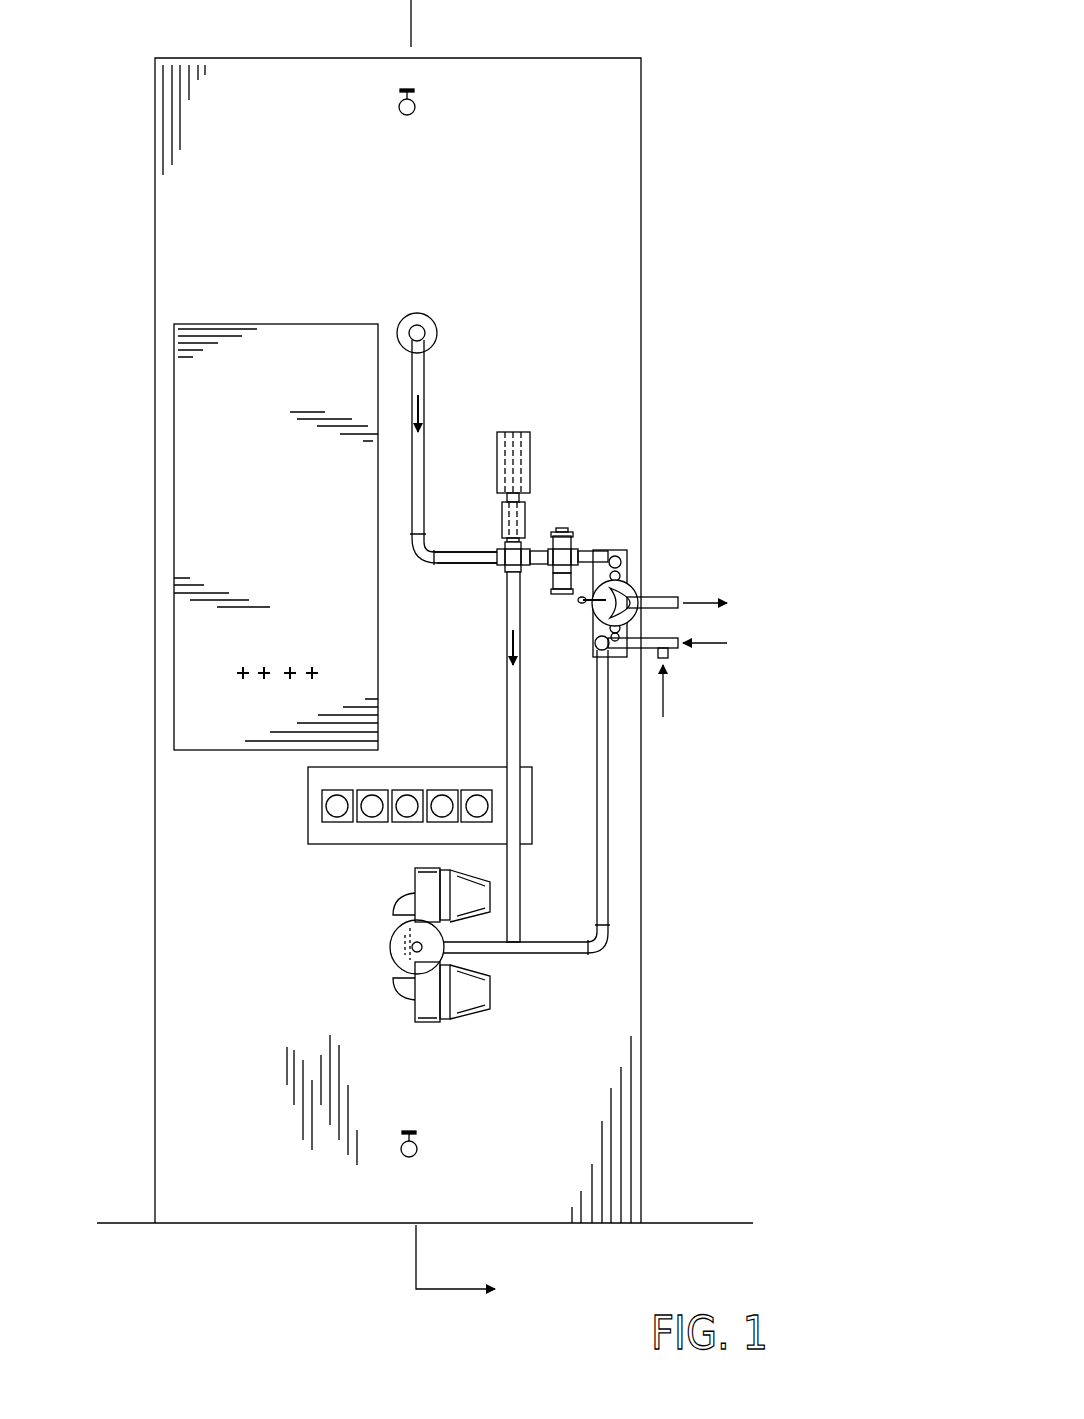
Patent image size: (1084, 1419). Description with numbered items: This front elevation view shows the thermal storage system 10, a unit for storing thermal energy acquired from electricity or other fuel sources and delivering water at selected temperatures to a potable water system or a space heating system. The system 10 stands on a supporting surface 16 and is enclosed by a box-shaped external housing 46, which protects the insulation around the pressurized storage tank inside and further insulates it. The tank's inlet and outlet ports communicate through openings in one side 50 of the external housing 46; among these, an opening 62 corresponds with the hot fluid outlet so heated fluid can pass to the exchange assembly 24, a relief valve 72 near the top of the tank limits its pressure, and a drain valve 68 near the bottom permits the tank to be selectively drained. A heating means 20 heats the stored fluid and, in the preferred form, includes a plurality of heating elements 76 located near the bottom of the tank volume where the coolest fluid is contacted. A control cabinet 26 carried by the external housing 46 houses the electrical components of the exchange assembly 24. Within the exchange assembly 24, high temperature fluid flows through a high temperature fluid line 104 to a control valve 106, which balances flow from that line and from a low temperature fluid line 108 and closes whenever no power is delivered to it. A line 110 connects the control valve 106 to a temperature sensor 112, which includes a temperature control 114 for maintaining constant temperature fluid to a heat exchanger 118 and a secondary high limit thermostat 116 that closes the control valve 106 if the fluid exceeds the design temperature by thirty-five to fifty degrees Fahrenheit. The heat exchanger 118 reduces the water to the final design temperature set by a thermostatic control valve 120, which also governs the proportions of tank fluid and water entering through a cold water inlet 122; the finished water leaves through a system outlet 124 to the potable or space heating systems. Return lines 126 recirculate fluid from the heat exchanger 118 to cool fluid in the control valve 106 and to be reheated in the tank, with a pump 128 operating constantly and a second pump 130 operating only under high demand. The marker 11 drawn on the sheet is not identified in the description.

The thermal storage system 10 is at (727, 325).
The section line 11 is at (455, 644).
The supporting surface 16 is at (716, 1223).
The heating means 20 is at (307, 847).
The exchange assembly 24 is at (592, 513).
The control cabinet 26 is at (256, 499).
The external housing 46 is at (642, 292).
The side of the external housing 50 is at (240, 980).
The opening 62 is at (430, 318).
The drain valve 68 is at (417, 1152).
The relief valve 72 is at (415, 110).
The heating elements 76 is at (473, 789).
The high temperature fluid line 104 is at (430, 373).
The control valve 106 is at (513, 432).
The low temperature fluid line 108 is at (507, 620).
The line 110 is at (537, 577).
The temperature sensor 112 is at (580, 545).
The temperature control 114 is at (564, 530).
The secondary high limit thermostat 116 is at (570, 594).
The heat exchanger 118 is at (627, 553).
The thermostatic control valve 120 is at (635, 590).
The cold water inlet 122 is at (668, 662).
The system outlet 124 is at (676, 597).
The return lines 126 is at (604, 748).
The pump 128 is at (420, 1023).
The second pump 130 is at (413, 878).